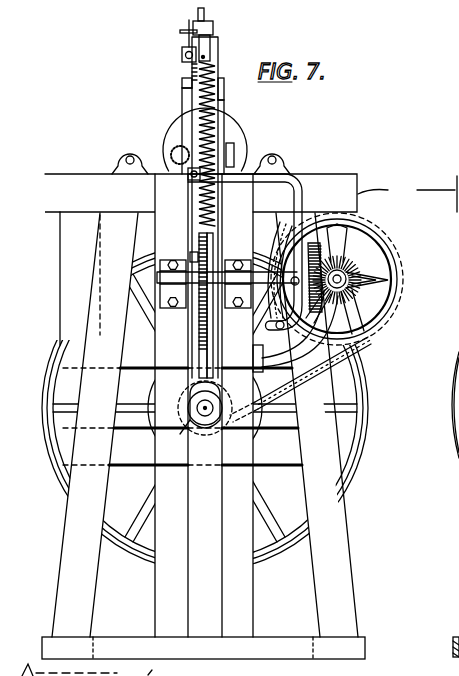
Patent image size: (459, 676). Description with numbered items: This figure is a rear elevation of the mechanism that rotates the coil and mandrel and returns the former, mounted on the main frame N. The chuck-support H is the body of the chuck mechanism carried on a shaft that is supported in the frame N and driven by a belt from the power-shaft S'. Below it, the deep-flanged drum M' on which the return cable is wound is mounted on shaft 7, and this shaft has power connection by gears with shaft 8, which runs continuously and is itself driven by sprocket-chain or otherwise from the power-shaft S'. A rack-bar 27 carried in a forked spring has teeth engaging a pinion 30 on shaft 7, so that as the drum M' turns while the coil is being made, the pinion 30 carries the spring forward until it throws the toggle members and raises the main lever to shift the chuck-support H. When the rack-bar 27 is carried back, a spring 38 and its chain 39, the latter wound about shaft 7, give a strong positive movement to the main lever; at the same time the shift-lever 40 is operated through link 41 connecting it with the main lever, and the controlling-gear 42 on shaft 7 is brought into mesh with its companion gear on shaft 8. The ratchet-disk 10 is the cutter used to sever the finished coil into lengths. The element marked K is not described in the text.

The adjusting cap K is at (213, 26).
The link 41 is at (190, 88).
The spring 38 is at (218, 100).
The ratchet-disk 10 is at (178, 142).
The chuck-support H is at (240, 124).
The shift-lever 40 is at (296, 180).
The frame N is at (249, 416).
The rack-bar 27 is at (191, 254).
The shaft 7 is at (268, 273).
The shaft 8 is at (348, 270).
The controlling-gear 42 is at (372, 325).
The pinion 30 is at (197, 320).
The chain 39 is at (214, 330).
The drum M' is at (191, 384).
The power-shaft S' is at (194, 421).